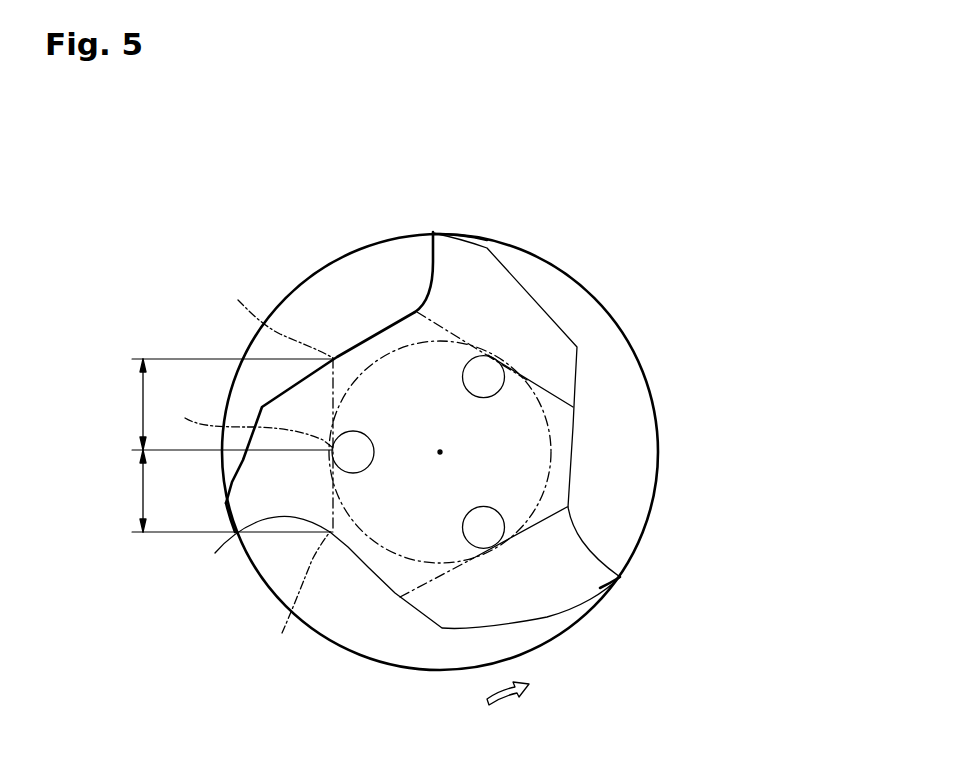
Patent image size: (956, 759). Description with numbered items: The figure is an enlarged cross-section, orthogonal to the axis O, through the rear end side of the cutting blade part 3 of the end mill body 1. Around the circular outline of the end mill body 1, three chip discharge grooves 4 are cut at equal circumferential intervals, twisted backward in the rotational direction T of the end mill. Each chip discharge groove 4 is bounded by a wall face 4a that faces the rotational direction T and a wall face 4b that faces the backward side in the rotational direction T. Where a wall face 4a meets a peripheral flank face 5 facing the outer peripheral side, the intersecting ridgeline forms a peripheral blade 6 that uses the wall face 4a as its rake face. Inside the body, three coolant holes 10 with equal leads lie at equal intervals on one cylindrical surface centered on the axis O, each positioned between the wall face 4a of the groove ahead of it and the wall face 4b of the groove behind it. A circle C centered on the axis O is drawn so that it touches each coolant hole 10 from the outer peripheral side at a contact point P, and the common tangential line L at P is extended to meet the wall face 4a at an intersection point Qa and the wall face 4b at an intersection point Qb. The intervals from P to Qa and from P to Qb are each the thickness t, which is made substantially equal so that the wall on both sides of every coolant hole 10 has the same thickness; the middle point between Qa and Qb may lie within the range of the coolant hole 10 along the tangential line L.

The end mill body 1 is at (486, 450).
The cutting blade part 3 is at (648, 290).
The chip discharge groove 4 is at (457, 454).
The wall face facing the rotational direction 4a is at (433, 265).
The wall face facing the backward side in the rotational direction 4b is at (343, 353).
The peripheral flank face 5 is at (462, 240).
The peripheral blade 6 is at (457, 438).
The coolant hole 10 is at (357, 448).
The axis O is at (440, 452).
The circle C is at (413, 574).
The tangential line L is at (333, 401).
The contact point P is at (251, 427).
The intersection point Qa is at (296, 596).
The intersection point Qb is at (278, 318).
The thickness t is at (227, 445).
The rotational direction of the end mill T is at (508, 707).